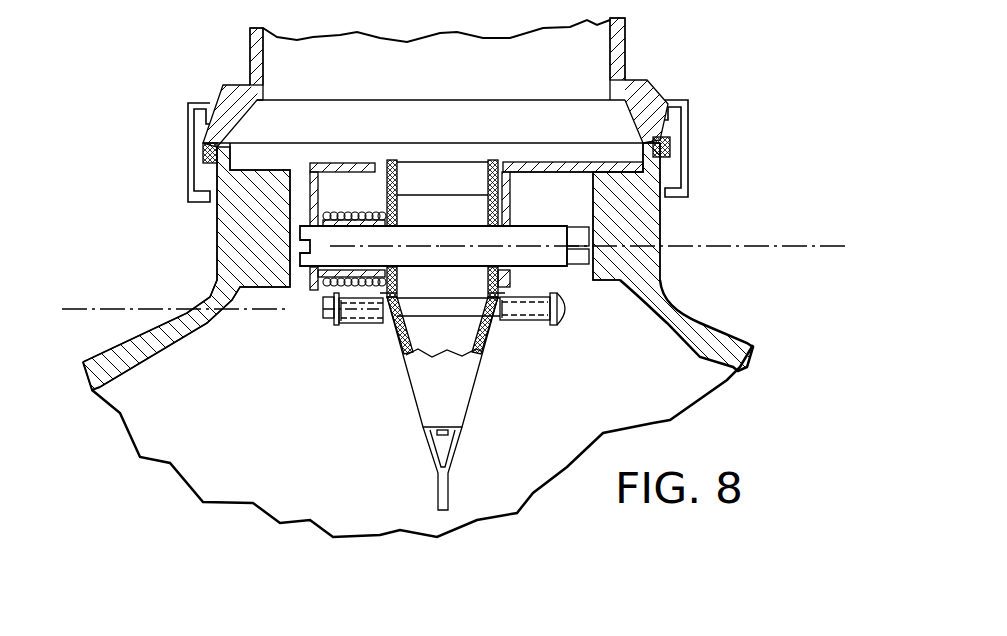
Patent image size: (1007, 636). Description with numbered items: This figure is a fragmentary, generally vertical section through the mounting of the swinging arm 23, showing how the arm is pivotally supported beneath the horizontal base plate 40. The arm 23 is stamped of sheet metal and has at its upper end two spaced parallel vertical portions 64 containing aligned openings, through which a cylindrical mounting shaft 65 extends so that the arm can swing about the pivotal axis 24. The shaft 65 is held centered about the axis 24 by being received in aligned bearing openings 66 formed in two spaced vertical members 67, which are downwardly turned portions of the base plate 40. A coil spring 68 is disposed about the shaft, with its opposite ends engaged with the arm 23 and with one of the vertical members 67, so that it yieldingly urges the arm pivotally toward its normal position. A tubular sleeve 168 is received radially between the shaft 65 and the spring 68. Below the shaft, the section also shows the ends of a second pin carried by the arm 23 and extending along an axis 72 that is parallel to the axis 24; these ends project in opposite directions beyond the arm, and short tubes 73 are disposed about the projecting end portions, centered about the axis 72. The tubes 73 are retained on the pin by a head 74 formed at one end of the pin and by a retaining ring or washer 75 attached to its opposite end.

The swinging arm 23 is at (428, 395).
The pivotal axis 24 is at (740, 245).
The horizontal base plate 40 is at (518, 160).
The vertical portions 64 is at (386, 161).
The mounting shaft 65 is at (323, 253).
The bearing openings 66 is at (298, 230).
The vertical members 67 is at (312, 188).
The coil spring 68 is at (347, 215).
The axis 72 is at (117, 308).
The short tubes 73 is at (374, 327).
The head 74 is at (553, 318).
The retaining ring or washer 75 is at (330, 330).
The tubular sleeve 168 is at (327, 218).